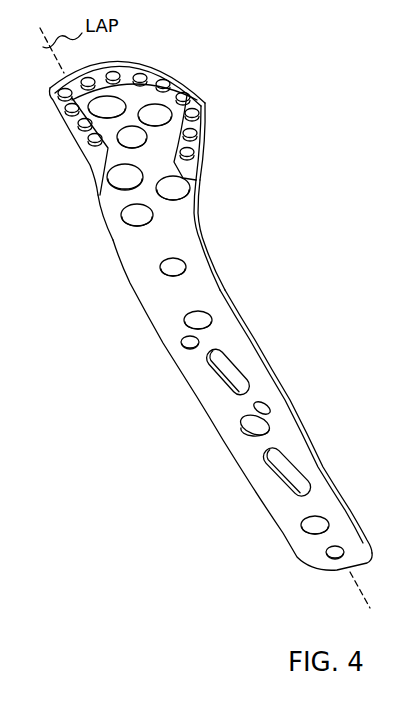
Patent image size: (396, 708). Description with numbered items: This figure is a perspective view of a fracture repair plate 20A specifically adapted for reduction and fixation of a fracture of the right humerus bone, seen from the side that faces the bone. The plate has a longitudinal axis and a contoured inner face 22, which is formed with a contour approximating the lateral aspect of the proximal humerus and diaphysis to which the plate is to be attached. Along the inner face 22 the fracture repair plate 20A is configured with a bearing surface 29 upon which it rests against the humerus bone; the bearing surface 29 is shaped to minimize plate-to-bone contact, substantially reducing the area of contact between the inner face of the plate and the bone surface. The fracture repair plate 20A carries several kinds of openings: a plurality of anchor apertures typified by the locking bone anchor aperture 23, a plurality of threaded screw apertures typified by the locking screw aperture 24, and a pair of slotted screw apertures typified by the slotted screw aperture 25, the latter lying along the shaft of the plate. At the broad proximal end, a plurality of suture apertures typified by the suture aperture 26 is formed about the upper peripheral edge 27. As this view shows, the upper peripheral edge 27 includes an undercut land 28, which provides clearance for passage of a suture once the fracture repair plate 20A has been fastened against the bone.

The fracture repair plate 20A is at (213, 263).
The inner face 22 is at (152, 287).
The locking bone anchor aperture 23 is at (98, 190).
The locking screw aperture 24 is at (250, 423).
The slotted screw aperture 25 is at (218, 373).
The suture aperture 26 is at (50, 100).
The upper peripheral edge 27 is at (160, 63).
The undercut land 28 is at (202, 123).
The bearing surface 29 is at (260, 368).